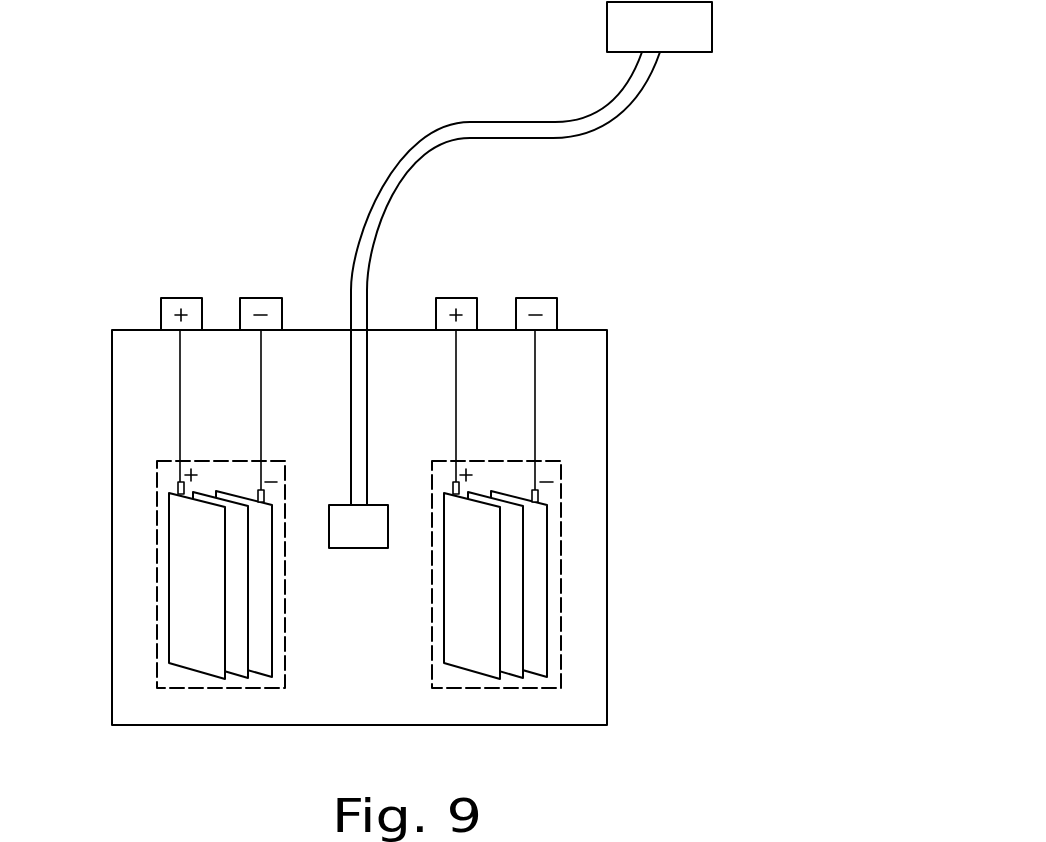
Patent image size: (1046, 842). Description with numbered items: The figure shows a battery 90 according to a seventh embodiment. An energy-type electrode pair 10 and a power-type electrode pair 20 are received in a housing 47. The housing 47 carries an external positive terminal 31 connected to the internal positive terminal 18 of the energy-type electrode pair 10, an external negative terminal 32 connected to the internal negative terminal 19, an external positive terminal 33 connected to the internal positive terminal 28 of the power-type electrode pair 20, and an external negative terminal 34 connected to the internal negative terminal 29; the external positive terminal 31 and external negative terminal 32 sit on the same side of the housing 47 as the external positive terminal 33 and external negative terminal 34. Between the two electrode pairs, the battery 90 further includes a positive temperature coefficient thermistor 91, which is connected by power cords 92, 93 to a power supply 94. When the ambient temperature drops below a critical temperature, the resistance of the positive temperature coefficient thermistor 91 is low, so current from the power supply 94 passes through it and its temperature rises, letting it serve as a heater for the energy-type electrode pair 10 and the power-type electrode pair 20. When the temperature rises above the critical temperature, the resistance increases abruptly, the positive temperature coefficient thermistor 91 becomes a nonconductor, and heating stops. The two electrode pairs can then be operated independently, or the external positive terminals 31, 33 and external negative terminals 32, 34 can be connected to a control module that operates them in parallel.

The battery 90 is at (148, 143).
The energy-type electrode pair 10 is at (178, 535).
The power-type electrode pair 20 is at (553, 519).
The internal positive terminal 18 is at (177, 486).
The internal negative terminal 19 is at (265, 496).
The internal positive terminal 28 is at (456, 494).
The internal negative terminal 29 is at (541, 492).
The external positive terminal 31 is at (178, 297).
The external negative terminal 32 is at (258, 297).
The external positive terminal 33 is at (457, 297).
The external negative terminal 34 is at (535, 297).
The housing 47 is at (607, 477).
The positive temperature coefficient thermistor 91 is at (353, 548).
The power cord 92 is at (555, 122).
The power cord 93 is at (637, 110).
The power supply 94 is at (659, 27).